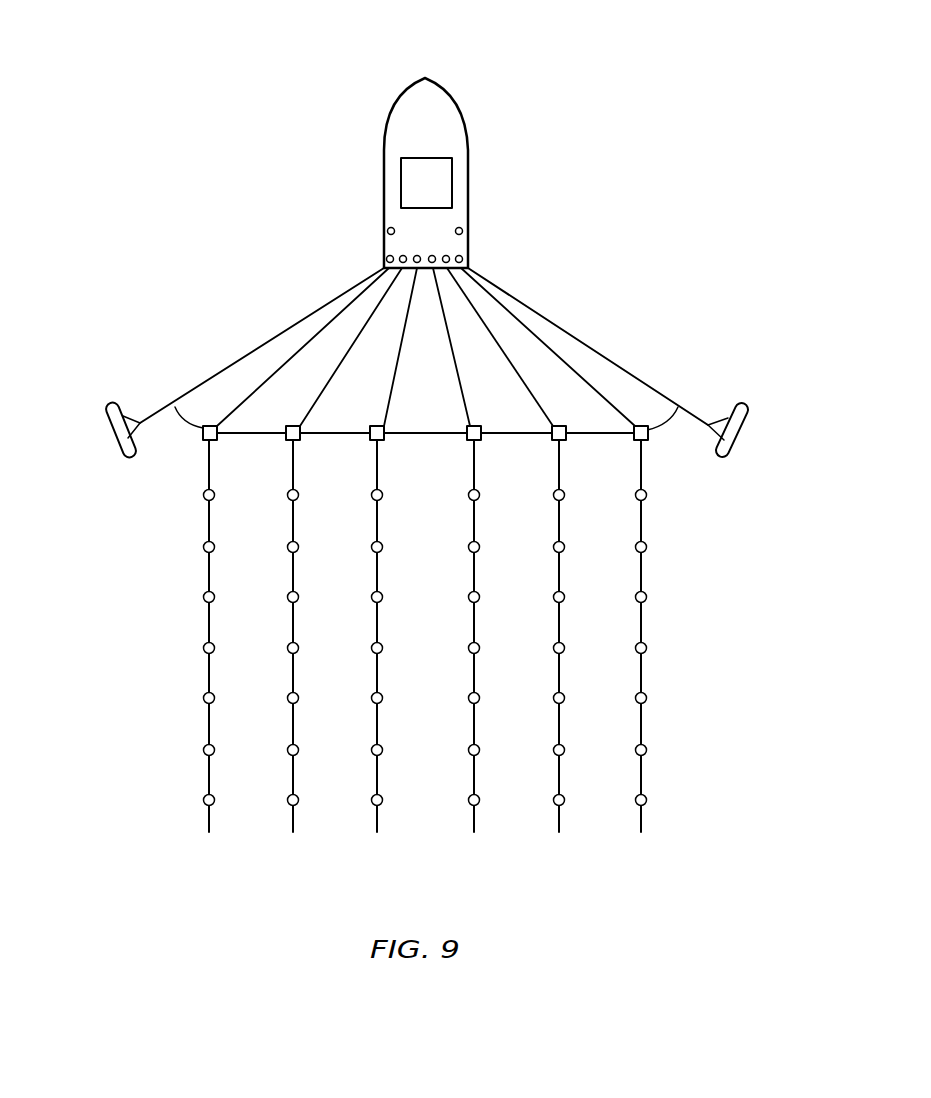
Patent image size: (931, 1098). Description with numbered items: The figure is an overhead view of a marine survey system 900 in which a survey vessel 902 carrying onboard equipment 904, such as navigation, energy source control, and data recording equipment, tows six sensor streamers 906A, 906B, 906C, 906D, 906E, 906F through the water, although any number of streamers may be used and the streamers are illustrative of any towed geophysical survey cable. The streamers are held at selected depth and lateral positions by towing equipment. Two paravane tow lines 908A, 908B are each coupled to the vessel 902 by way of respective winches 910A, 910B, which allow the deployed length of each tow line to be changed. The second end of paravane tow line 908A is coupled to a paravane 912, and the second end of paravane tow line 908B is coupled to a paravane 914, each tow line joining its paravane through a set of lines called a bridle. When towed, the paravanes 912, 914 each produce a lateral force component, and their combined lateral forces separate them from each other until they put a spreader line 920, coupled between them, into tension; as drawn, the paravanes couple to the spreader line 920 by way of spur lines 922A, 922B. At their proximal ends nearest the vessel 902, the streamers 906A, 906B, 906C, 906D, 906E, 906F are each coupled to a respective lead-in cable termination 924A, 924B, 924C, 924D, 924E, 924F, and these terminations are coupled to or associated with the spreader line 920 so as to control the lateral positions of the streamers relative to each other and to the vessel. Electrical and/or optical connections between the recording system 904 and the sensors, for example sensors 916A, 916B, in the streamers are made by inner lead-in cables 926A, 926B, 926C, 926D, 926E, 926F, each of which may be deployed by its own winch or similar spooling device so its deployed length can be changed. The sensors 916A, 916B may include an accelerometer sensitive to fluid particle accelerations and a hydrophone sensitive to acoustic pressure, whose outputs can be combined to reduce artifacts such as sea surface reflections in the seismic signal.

The marine survey system 900 is at (197, 63).
The survey vessel 902 is at (434, 173).
The onboard equipment 904 is at (452, 175).
The streamer 906A is at (155, 660).
The streamer 906B is at (293, 832).
The streamer 906C is at (377, 832).
The streamer 906D is at (474, 832).
The streamer 906E is at (559, 832).
The streamer 906F is at (641, 832).
The paravane tow line 908A is at (367, 258).
The paravane tow line 908B is at (568, 322).
The winch 910A is at (388, 230).
The winch 910B is at (463, 225).
The paravane 912 is at (127, 460).
The paravane 914 is at (740, 402).
The sensor 916A is at (210, 495).
The sensor 916B is at (210, 547).
The spreader line 920 is at (398, 432).
The spur line 922A is at (192, 428).
The spur line 922B is at (662, 425).
The lead-in cable termination 924A is at (215, 442).
The lead-in cable termination 924B is at (298, 442).
The lead-in cable termination 924C is at (383, 442).
The lead-in cable termination 924D is at (480, 442).
The lead-in cable termination 924E is at (565, 442).
The lead-in cable termination 924F is at (648, 440).
The inner lead-in cable 926A is at (355, 303).
The inner lead-in cable 926B is at (367, 338).
The inner lead-in cable 926C is at (397, 377).
The inner lead-in cable 926D is at (442, 305).
The inner lead-in cable 926E is at (477, 325).
The inner lead-in cable 926F is at (557, 363).